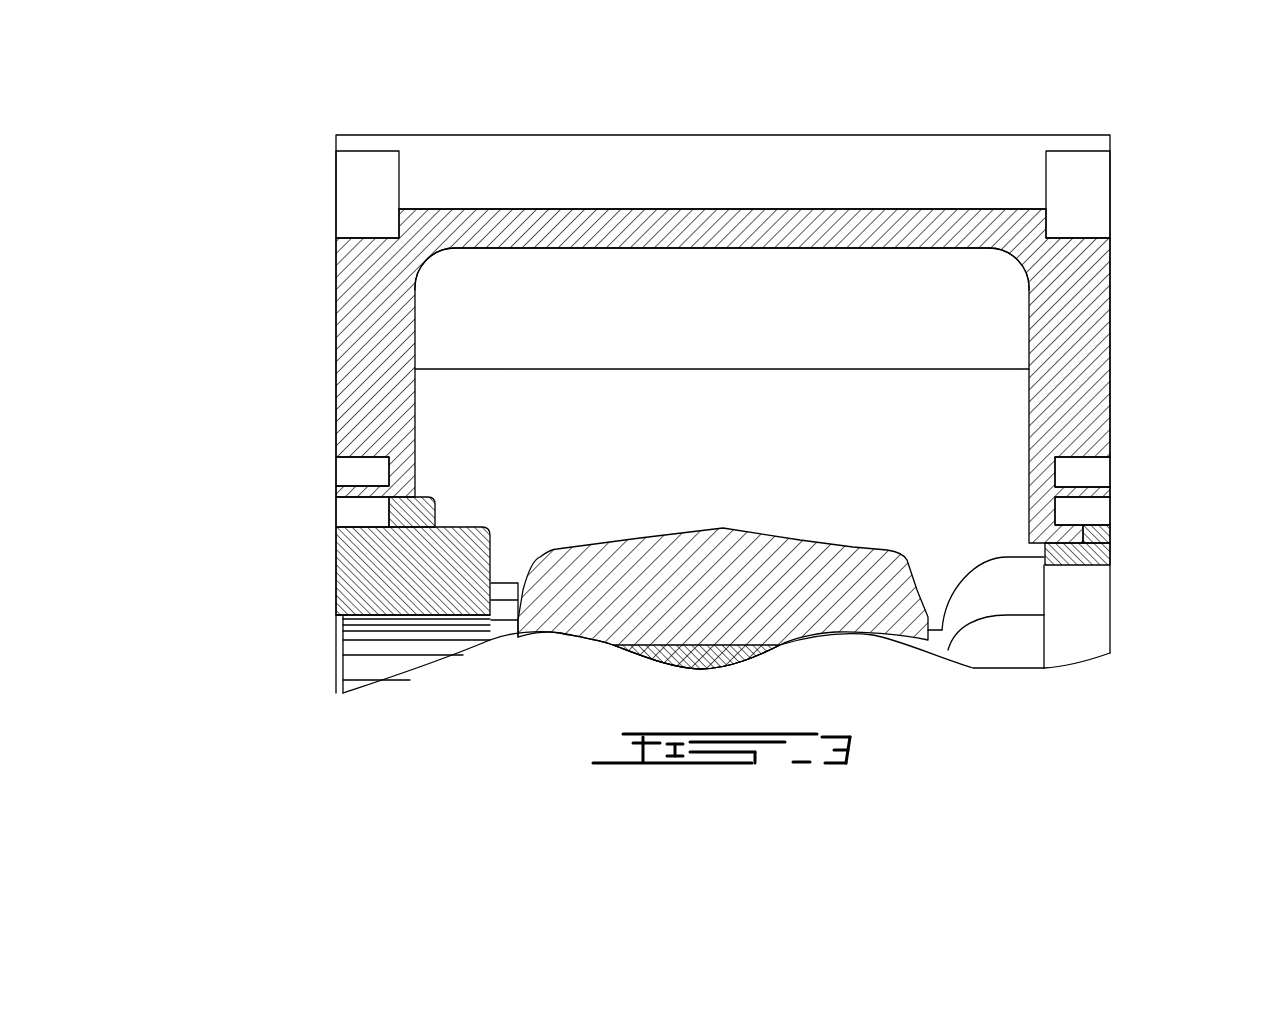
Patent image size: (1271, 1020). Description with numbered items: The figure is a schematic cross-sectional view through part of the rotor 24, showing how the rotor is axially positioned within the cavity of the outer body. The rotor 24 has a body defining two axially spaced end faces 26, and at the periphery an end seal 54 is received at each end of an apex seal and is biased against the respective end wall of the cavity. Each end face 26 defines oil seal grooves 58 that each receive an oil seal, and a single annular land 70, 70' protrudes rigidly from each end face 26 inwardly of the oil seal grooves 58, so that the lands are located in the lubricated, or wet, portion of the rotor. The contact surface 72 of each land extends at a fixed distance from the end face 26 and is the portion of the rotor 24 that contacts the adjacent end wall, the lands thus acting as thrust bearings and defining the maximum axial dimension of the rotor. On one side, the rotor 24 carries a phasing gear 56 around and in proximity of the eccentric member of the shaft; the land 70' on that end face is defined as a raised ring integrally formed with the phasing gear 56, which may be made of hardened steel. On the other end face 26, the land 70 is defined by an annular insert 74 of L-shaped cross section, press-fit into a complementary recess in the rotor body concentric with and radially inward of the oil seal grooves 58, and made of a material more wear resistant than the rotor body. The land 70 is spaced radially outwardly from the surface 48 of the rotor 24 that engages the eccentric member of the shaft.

The rotor 24 is at (936, 210).
The end faces 26 is at (335, 309).
The end seal 54 is at (1090, 192).
The oil seal grooves 58 is at (355, 513).
The land 70' is at (337, 556).
The land 70 is at (1169, 523).
The contact surface 72 is at (337, 592).
The annular insert 74 is at (1072, 556).
The phasing gear 56 is at (326, 615).
The surface 48 is at (706, 670).